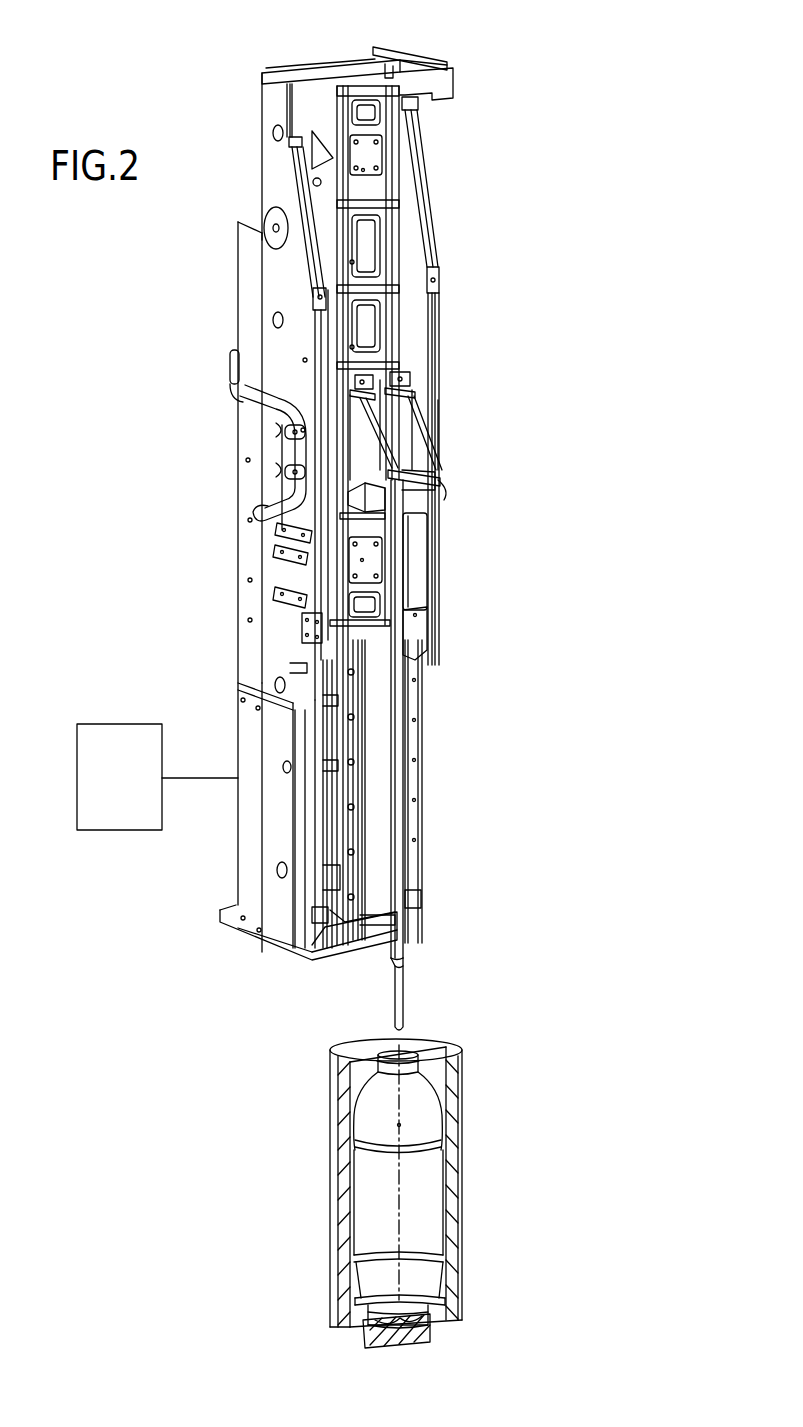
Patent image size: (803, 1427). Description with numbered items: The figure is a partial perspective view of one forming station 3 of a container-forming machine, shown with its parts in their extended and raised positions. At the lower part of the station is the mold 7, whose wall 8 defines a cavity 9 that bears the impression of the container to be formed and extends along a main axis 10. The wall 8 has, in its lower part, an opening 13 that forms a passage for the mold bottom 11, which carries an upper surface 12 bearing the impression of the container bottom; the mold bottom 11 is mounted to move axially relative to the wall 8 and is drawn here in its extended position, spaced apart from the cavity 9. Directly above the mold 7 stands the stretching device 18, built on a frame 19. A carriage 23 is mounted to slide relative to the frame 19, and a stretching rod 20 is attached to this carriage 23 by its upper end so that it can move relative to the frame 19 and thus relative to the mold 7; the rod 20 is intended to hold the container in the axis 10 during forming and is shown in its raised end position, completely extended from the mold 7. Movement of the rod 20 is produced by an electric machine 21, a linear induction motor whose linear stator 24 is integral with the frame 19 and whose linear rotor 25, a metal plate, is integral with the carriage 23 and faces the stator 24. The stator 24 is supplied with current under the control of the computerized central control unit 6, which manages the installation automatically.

The forming station 3 is at (487, 241).
The central control unit 6 is at (77, 760).
The mold 7 is at (461, 1049).
The wall 8 is at (447, 1160).
The cavity 9 is at (418, 1113).
The main axis 10 is at (400, 1125).
The mold bottom 11 is at (432, 1328).
The upper surface 12 is at (392, 1318).
The opening 13 is at (407, 1313).
The stretching device 18 is at (445, 324).
The frame 19 is at (278, 283).
The stretching rod 20 is at (404, 984).
The electric machine 21 is at (403, 197).
The carriage 23 is at (410, 441).
The linear stator 24 is at (397, 245).
The linear rotor 25 is at (413, 551).